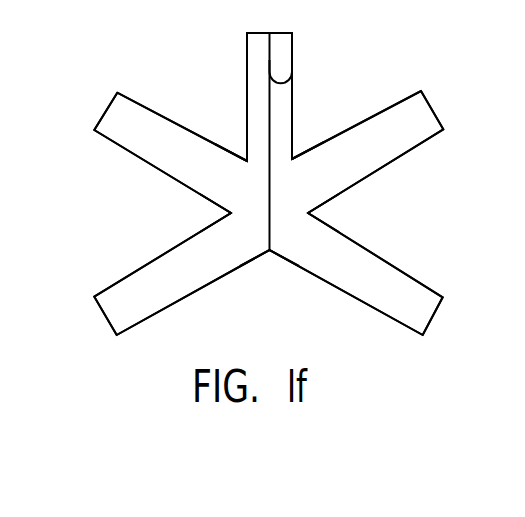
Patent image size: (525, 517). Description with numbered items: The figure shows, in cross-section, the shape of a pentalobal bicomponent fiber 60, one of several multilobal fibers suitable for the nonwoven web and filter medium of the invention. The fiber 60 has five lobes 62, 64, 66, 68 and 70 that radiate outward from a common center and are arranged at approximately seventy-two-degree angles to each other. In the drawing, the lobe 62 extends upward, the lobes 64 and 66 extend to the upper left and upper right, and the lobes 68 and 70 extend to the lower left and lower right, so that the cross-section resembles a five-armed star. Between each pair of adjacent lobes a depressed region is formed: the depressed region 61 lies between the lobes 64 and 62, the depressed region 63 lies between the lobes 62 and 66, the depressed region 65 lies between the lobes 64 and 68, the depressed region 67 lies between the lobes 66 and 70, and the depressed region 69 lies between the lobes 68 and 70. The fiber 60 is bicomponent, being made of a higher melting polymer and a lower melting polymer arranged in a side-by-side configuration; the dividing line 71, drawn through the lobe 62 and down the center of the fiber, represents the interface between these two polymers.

The pentalobal bicomponent fiber 60 is at (402, 198).
The depressed region 61 is at (244, 159).
The lobe 62 is at (286, 39).
The depressed region 63 is at (294, 157).
The lobe 64 is at (106, 111).
The depressed region 65 is at (230, 213).
The lobe 66 is at (436, 117).
The depressed region 67 is at (309, 213).
The lobe 68 is at (108, 322).
The depressed region 69 is at (270, 250).
The lobe 70 is at (432, 320).
The dividing line 71 is at (291, 80).